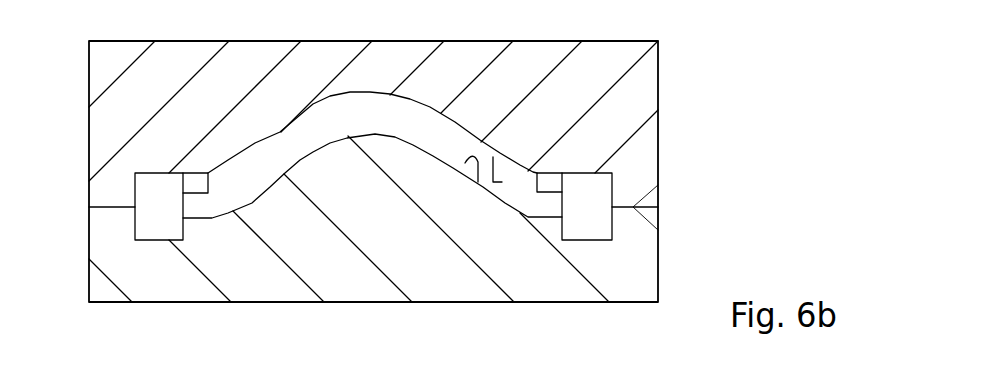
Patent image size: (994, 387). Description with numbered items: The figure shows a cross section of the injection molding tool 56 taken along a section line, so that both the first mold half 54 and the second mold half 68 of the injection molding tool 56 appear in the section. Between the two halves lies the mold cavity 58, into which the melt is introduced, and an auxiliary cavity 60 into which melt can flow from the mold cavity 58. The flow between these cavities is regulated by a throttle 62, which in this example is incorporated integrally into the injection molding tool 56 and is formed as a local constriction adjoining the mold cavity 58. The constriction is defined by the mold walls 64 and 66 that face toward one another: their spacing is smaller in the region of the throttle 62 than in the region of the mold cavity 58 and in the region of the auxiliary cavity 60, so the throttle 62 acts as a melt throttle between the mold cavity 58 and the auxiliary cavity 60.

The first mold half 54 is at (170, 285).
The injection molding tool 56 is at (697, 64).
The mold cavity 58 is at (384, 125).
The auxiliary cavity 60 is at (595, 192).
The throttle 62 is at (552, 207).
The mold wall 64 is at (502, 182).
The mold wall 66 is at (465, 163).
The second mold half 68 is at (175, 151).